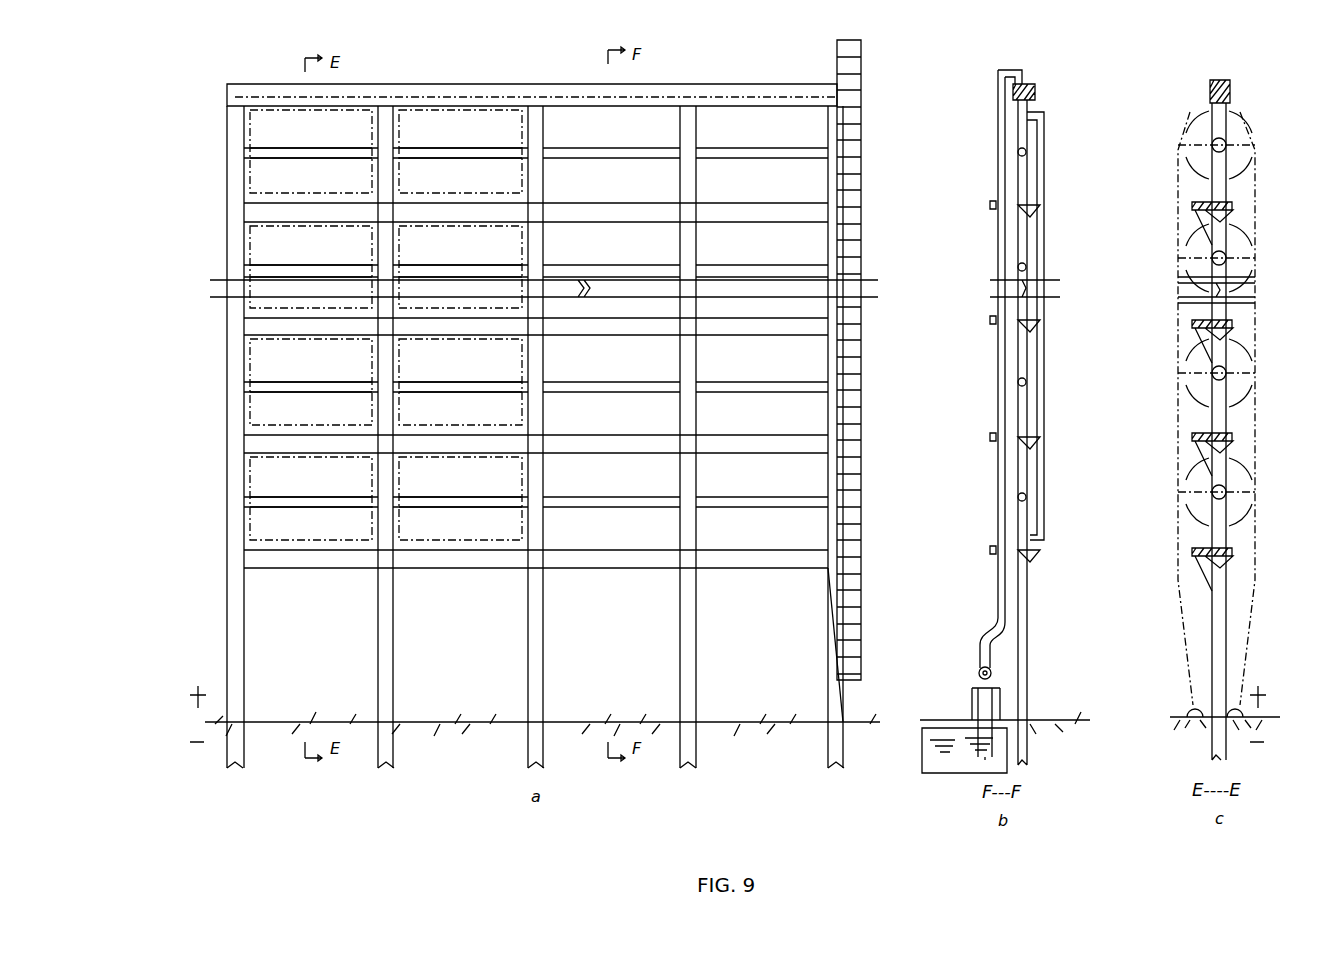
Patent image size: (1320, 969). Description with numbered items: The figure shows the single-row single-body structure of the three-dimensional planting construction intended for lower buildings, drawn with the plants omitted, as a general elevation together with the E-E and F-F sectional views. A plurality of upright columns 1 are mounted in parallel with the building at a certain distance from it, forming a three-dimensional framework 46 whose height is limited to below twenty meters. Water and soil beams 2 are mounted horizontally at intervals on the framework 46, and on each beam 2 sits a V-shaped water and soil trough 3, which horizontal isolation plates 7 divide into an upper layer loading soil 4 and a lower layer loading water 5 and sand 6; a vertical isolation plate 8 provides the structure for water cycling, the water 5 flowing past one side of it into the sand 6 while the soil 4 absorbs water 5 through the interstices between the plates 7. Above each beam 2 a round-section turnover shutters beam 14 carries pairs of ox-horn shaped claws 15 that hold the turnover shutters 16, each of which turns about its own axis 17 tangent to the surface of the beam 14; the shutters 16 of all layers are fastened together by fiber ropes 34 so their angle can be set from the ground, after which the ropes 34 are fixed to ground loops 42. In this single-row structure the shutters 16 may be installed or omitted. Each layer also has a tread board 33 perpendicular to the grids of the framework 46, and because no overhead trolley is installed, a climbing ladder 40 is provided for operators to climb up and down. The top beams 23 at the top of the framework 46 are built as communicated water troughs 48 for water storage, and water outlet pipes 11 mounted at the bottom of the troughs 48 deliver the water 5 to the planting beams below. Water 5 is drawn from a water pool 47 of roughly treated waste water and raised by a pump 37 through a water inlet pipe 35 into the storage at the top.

The upright column 1 is at (828, 735).
The water and soil beam 2 is at (245, 218).
The water and soil trough 3 is at (1040, 310).
The soil 4 is at (1036, 208).
The water 5 is at (838, 720).
The sand 6 is at (1032, 560).
The horizontal isolation plate 7 is at (1040, 550).
The vertical isolation plate 8 is at (1035, 447).
The water outlet pipe 11 is at (1045, 122).
The turnover shutters beam 14 is at (437, 150).
The ox-horn shaped claw 15 is at (1228, 465).
The turnover shutter 16 is at (627, 240).
The axis 17 is at (1230, 150).
The top beam 23 is at (448, 84).
The tread board 33 is at (993, 203).
The fiber rope 34 is at (1190, 660).
The water inlet pipe 35 is at (1000, 70).
The pump 37 is at (983, 655).
The climbing ladder 40 is at (856, 598).
The ground loop 42 is at (858, 65).
The three-dimensional framework 46 is at (590, 268).
The water pool 47 is at (955, 728).
The communicated water trough 48 is at (657, 97).